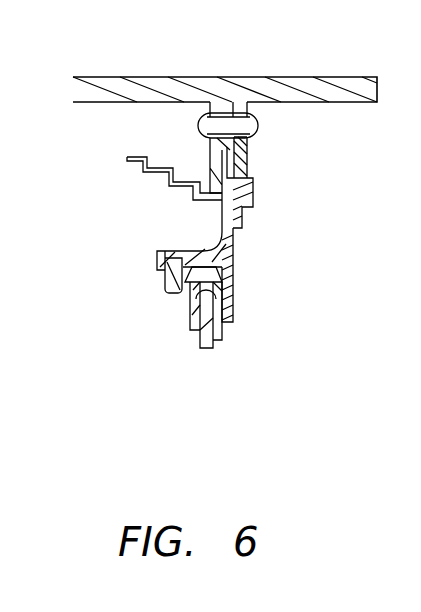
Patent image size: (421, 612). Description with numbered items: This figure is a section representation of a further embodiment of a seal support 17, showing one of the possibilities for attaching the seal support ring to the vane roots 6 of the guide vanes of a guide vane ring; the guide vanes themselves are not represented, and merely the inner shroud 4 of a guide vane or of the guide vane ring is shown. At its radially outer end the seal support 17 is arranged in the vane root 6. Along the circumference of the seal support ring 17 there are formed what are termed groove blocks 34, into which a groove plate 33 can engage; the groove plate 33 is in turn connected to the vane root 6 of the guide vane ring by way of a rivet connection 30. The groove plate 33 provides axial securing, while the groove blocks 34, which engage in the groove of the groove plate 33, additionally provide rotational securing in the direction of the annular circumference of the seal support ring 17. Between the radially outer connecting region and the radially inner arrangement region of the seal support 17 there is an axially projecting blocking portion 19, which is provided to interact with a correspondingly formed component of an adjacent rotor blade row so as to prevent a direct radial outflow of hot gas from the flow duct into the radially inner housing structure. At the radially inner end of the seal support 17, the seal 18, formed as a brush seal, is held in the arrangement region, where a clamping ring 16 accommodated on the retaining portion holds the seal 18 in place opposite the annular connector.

The inner shroud 4 is at (250, 88).
The vane root 6 is at (213, 160).
The rivet connection 30 is at (255, 131).
The groove plate 33 is at (240, 163).
The groove block 34 is at (248, 208).
The seal support 17 is at (237, 242).
The blocking portion 19 is at (147, 169).
The clamping ring 16 is at (164, 278).
The seal 18 is at (200, 333).